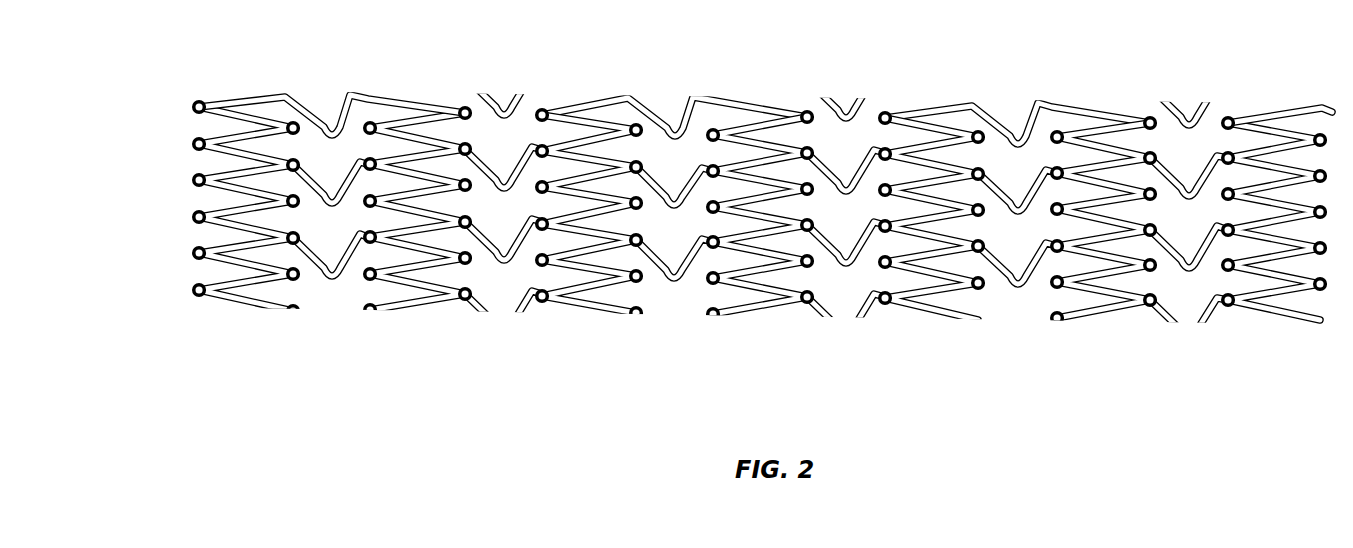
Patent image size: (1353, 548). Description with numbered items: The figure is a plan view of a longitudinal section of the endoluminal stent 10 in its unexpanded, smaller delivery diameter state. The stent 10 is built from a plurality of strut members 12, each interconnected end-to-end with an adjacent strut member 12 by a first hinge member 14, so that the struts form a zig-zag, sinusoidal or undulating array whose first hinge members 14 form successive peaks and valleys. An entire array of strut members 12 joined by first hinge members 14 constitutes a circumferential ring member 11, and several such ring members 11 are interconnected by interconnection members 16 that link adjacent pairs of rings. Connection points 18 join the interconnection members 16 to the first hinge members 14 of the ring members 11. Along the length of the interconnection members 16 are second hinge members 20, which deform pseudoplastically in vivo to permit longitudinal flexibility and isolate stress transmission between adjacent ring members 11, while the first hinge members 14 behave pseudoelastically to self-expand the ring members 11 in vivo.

The endoluminal stent 10 is at (1192, 57).
The circumferential ring member 11 is at (1175, 342).
The strut member 12 is at (783, 107).
The first hinge member 14 is at (643, 282).
The interconnection member 16 is at (499, 185).
The connection point 18 is at (470, 215).
The second hinge member 20 is at (502, 270).